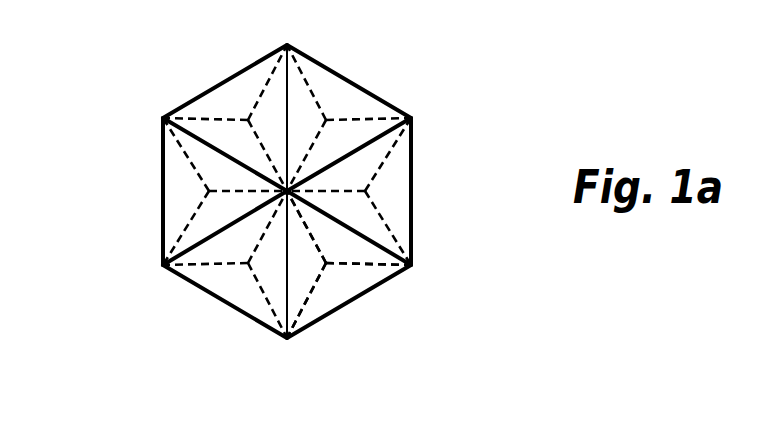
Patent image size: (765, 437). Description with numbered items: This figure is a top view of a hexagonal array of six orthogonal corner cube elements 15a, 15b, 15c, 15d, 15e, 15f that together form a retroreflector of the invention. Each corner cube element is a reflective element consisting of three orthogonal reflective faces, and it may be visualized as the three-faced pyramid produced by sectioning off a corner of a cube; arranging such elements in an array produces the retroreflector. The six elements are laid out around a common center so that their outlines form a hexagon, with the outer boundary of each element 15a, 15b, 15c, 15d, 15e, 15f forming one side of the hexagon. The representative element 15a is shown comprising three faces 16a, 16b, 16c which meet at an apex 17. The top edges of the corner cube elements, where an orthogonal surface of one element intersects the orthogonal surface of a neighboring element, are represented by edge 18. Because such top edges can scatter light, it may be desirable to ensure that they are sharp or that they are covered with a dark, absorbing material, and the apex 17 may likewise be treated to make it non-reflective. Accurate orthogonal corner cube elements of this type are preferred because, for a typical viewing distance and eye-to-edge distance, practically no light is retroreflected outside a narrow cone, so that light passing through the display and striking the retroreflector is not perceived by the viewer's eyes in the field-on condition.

The corner cube element 15a is at (363, 297).
The corner cube element 15b is at (411, 188).
The corner cube element 15c is at (348, 83).
The corner cube element 15d is at (222, 82).
The corner cube element 15e is at (163, 185).
The corner cube element 15f is at (217, 300).
The face 16a is at (372, 279).
The face 16b is at (358, 250).
The face 16c is at (302, 280).
The apex 17 is at (326, 263).
The edge 18 is at (283, 303).